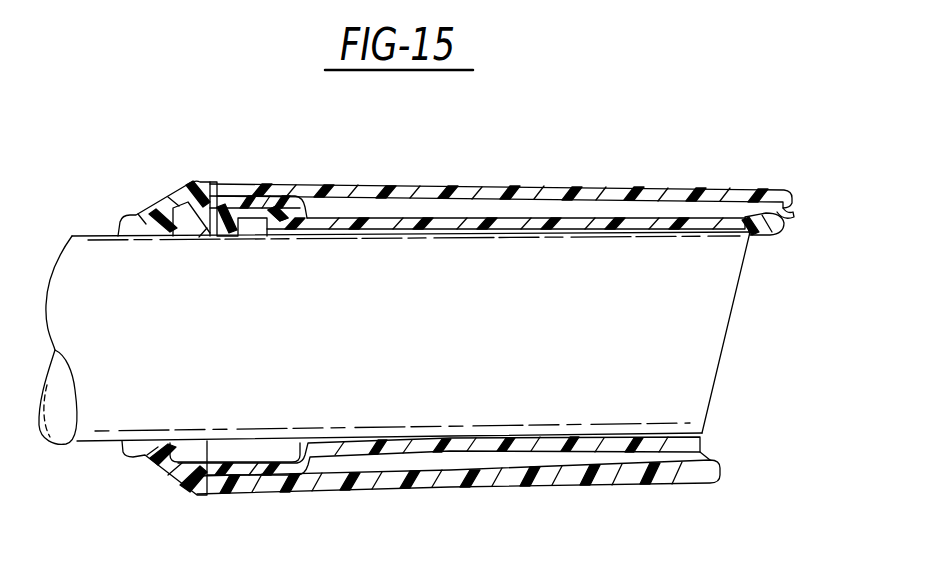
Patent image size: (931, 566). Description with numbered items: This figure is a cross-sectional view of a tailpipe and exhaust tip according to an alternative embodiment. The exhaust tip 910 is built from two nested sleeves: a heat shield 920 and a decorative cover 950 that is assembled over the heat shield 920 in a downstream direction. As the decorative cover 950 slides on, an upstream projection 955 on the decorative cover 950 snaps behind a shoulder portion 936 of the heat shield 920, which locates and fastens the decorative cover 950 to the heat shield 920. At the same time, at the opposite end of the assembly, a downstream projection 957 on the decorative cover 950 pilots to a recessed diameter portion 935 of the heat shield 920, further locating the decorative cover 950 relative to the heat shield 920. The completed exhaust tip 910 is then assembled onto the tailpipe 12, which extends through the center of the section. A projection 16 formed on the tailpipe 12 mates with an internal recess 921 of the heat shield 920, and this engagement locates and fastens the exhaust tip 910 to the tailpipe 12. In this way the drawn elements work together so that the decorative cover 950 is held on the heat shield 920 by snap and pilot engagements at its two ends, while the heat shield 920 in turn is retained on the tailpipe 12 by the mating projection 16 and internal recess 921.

The exhaust tip 910 is at (103, 88).
The tailpipe 12 is at (69, 252).
The upstream projection 955 is at (202, 183).
The shoulder portion 936 is at (214, 192).
The projection 16 is at (258, 216).
The internal recess 921 is at (283, 220).
The decorative cover 950 is at (333, 192).
The heat shield 920 is at (452, 217).
The downstream projection 957 is at (790, 201).
The recessed diameter portion 935 is at (782, 233).